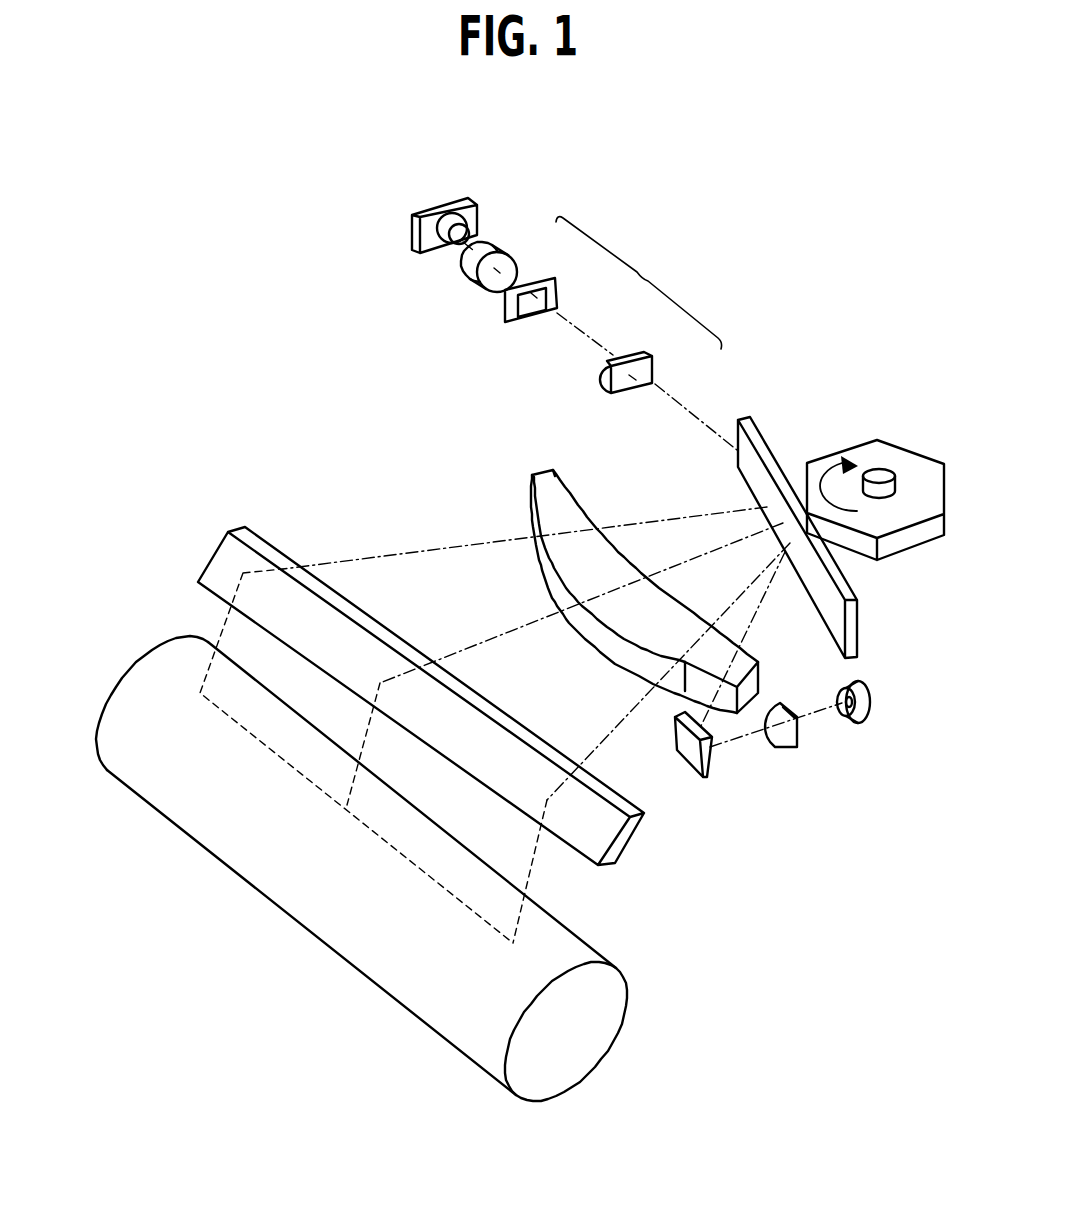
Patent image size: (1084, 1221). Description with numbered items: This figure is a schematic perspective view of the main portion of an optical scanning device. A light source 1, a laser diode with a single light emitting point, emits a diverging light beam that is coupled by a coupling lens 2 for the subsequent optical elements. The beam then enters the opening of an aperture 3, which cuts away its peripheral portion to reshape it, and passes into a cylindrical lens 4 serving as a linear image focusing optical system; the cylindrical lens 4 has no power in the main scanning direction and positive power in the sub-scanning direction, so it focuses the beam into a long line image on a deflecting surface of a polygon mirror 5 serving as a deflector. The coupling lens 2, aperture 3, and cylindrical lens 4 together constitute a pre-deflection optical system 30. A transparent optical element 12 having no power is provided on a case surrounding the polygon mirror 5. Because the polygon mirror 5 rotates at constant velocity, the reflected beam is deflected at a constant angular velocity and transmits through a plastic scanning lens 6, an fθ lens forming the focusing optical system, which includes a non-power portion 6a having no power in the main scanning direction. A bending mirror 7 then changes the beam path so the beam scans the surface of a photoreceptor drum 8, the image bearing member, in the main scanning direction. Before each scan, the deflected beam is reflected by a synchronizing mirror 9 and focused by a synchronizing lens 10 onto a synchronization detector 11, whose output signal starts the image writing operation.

The light source 1 is at (479, 228).
The coupling lens 2 is at (518, 262).
The aperture 3 is at (558, 296).
The cylindrical lens 4 is at (655, 372).
The pre-deflection optical system 30 is at (639, 283).
The polygon mirror 5 is at (892, 461).
The transparent optical element 12 is at (767, 432).
The scanning lens 6 is at (543, 483).
The non-power portion 6a is at (752, 688).
The bending mirror 7 is at (227, 562).
The photoreceptor drum 8 is at (628, 1001).
The synchronizing mirror 9 is at (710, 750).
The synchronizing lens 10 is at (797, 729).
The synchronization detector 11 is at (870, 704).